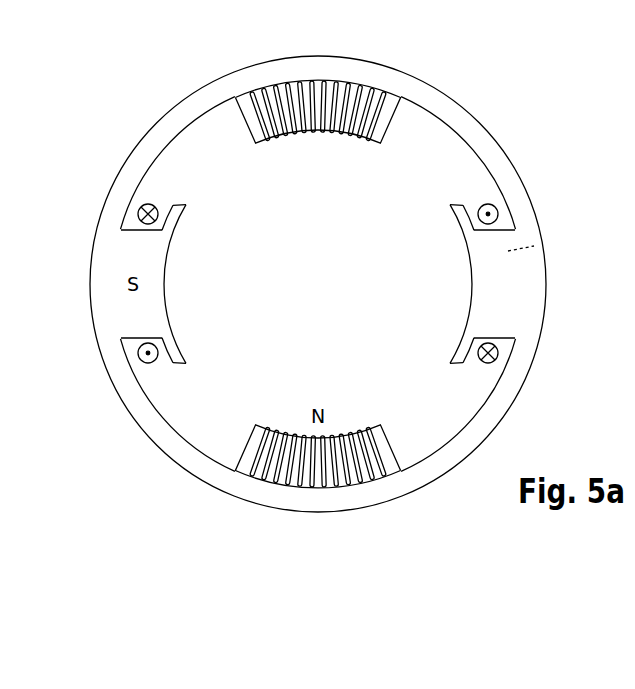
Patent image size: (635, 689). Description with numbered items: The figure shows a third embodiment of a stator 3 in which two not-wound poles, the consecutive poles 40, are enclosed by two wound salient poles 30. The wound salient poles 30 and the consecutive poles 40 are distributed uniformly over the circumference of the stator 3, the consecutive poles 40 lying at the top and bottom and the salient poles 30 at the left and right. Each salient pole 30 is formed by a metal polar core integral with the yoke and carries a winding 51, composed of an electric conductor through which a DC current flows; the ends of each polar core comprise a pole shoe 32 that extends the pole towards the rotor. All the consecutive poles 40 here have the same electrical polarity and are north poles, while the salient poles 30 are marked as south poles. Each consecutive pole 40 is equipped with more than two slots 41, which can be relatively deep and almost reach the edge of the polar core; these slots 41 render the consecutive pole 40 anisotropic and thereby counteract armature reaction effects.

The stator 3 is at (475, 127).
The salient pole 30 is at (487, 283).
The pole shoe 32 is at (452, 216).
The consecutive pole 40 is at (330, 80).
The slot 41 is at (390, 97).
The winding 51 is at (148, 353).